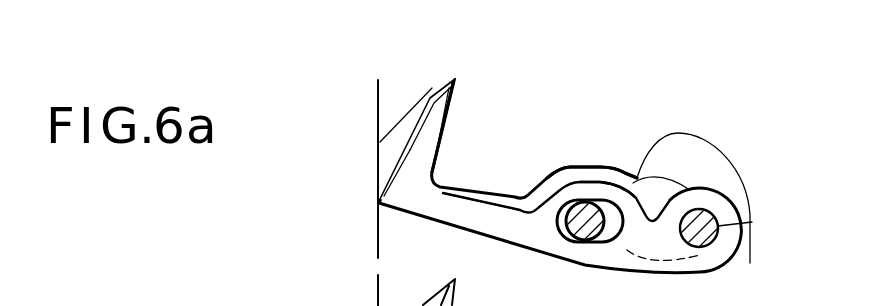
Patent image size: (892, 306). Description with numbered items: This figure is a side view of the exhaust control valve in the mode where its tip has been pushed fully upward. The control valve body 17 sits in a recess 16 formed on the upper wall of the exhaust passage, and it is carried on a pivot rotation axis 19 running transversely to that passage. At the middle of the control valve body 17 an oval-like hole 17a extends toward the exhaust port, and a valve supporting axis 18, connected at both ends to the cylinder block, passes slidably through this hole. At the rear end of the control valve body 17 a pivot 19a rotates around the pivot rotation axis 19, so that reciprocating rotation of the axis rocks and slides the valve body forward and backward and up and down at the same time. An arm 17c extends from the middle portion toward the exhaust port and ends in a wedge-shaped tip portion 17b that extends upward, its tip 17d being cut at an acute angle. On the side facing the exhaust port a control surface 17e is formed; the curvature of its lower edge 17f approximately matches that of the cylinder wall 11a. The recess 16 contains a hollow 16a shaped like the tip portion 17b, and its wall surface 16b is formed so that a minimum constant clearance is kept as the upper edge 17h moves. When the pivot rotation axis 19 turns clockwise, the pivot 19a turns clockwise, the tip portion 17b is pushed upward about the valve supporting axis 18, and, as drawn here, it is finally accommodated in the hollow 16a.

The cylinder wall 11a is at (378, 92).
The recess 16 is at (572, 167).
The hollow 16a is at (424, 108).
The wall surface 16b is at (411, 133).
The control valve body 17 is at (545, 262).
The oval-like hole 17a is at (610, 190).
The tip portion 17b is at (443, 125).
The arm 17c is at (477, 195).
The tip 17d is at (448, 76).
The control surface 17e is at (400, 160).
The lower edge 17f is at (378, 203).
The upper edge 17h is at (432, 88).
The valve supporting axis 18 is at (583, 242).
The pivot rotation axis 19 is at (673, 180).
The pivot 19a is at (752, 222).